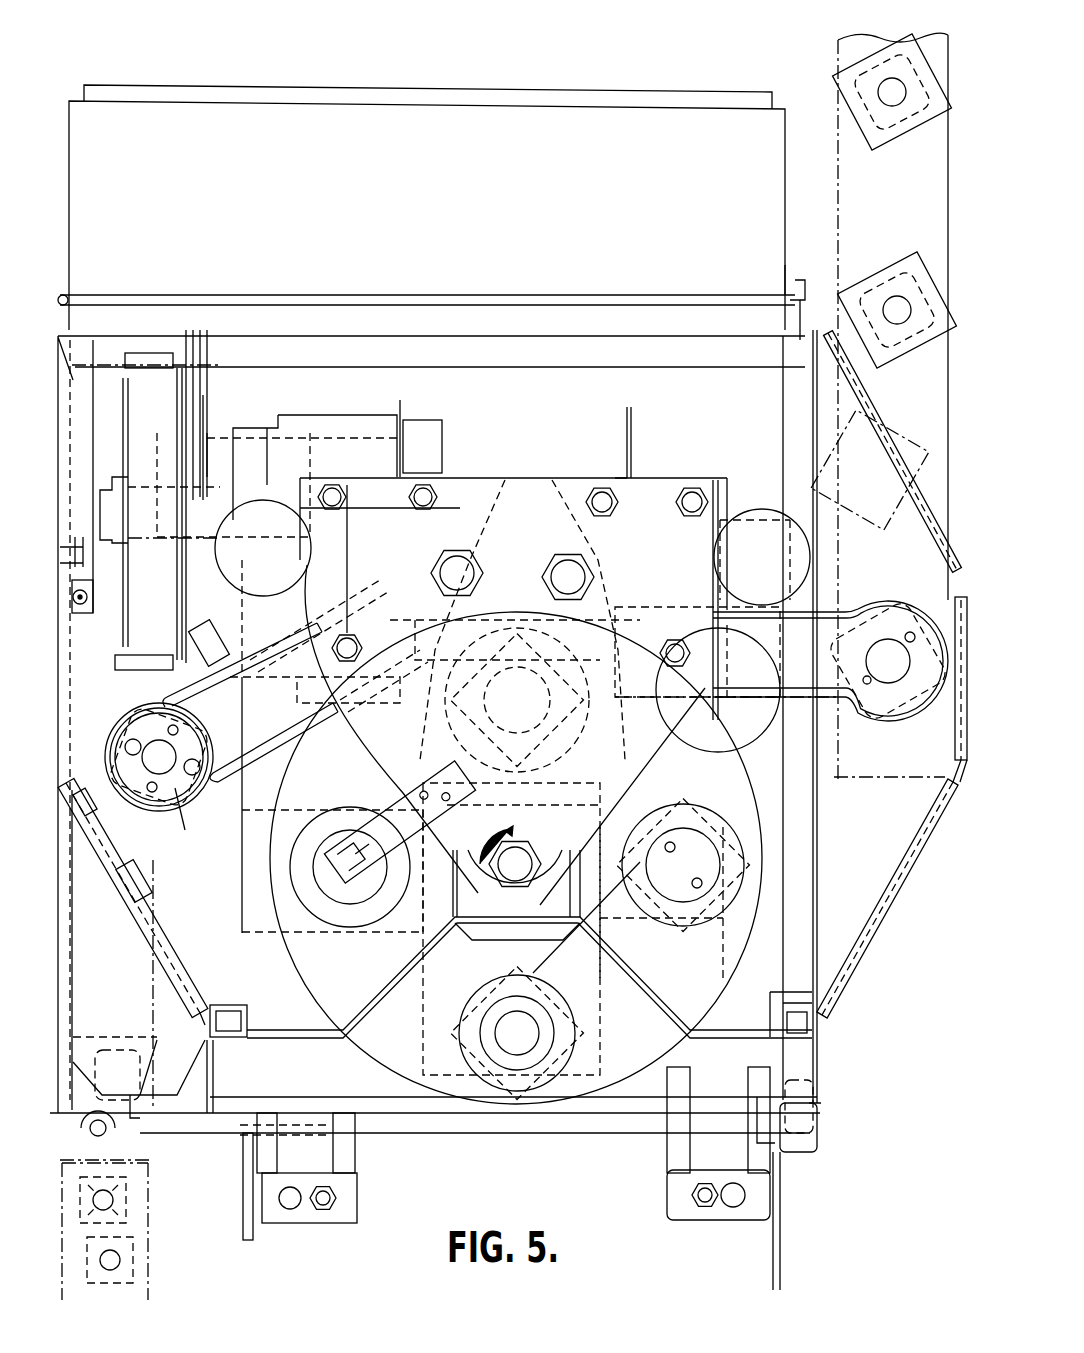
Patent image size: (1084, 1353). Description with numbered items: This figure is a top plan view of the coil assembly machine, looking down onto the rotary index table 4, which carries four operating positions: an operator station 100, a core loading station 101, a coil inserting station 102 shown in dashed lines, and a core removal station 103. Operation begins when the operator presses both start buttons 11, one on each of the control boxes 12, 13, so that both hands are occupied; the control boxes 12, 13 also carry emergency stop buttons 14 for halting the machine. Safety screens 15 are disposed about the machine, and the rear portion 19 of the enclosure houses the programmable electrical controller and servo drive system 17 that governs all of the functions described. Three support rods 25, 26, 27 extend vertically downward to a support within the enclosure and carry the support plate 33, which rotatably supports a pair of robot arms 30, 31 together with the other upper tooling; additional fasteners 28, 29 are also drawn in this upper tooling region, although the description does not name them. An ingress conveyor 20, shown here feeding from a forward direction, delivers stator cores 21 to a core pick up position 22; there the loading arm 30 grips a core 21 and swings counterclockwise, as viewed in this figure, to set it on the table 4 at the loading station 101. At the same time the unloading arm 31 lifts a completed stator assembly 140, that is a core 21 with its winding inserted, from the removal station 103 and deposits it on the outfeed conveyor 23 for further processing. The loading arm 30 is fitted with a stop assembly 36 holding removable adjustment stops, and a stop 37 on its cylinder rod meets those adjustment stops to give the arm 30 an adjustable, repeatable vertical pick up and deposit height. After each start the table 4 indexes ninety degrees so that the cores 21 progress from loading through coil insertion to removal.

The rotary index table 4 is at (572, 1097).
The start buttons 11 is at (323, 1200).
The control box 12 is at (358, 1200).
The control box 13 is at (668, 1195).
The emergency stop buttons 14 is at (290, 1200).
The screens 15 is at (85, 835).
The programmable electrical controller and servo drive system 17 is at (300, 86).
The rear portion of the enclosure 19 is at (196, 130).
The ingress conveyor 20 is at (137, 1206).
The cores 21 is at (115, 1195).
The core pick up position 22 is at (128, 718).
The outfeed conveyor 23 is at (950, 296).
The support rod 25 is at (512, 878).
The support rod 26 is at (466, 572).
The support rod 27 is at (574, 580).
The bolts 28 is at (420, 488).
The bolts 29 is at (676, 640).
The robot arm 30 is at (232, 743).
The robot arm 31 is at (826, 672).
The support plate 33 is at (629, 758).
The stop assembly 36 is at (385, 830).
The stop 37 is at (172, 790).
The operator station 100 is at (517, 1090).
The core loading station 101 is at (328, 900).
The coil inserting station 102 is at (522, 478).
The core removal station 103 is at (728, 830).
The completed stator assembly 140 is at (910, 268).